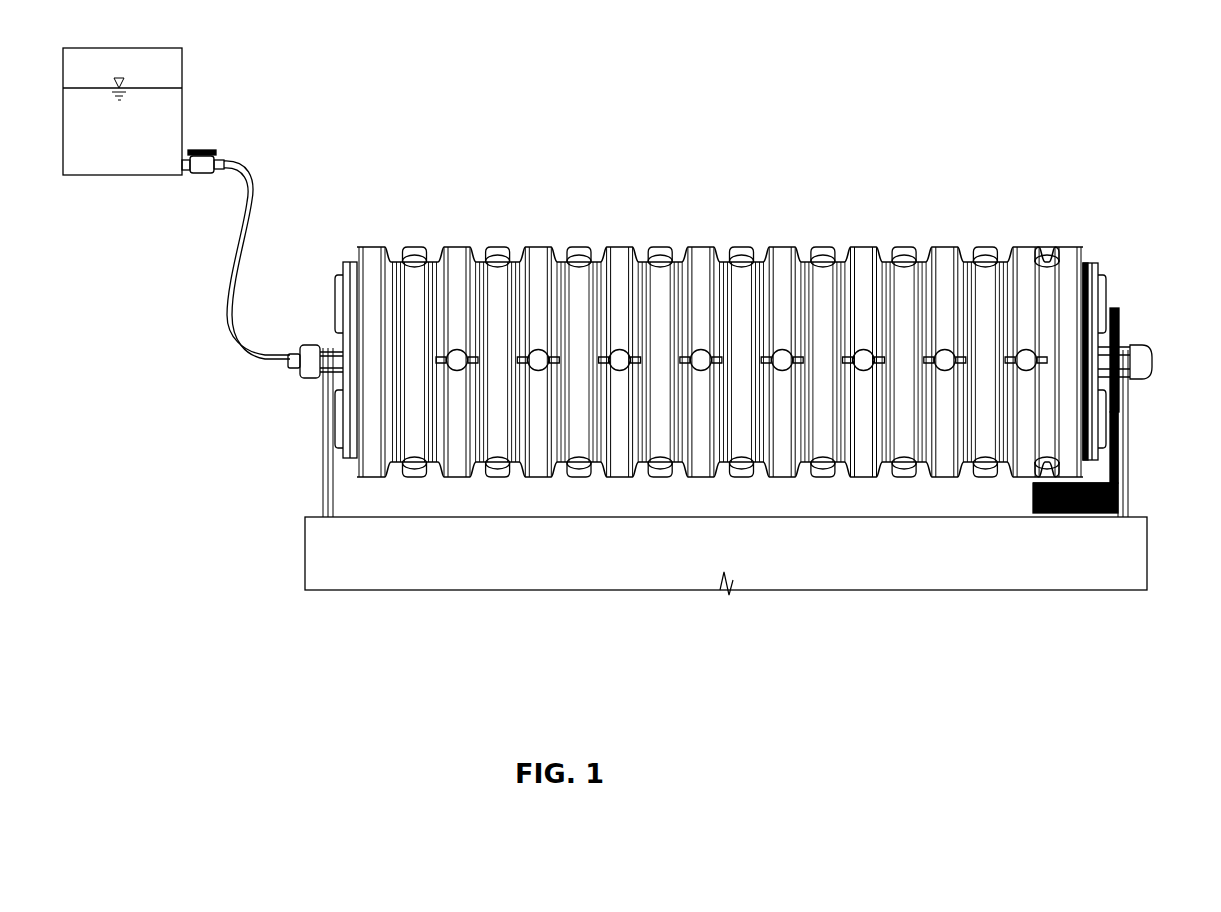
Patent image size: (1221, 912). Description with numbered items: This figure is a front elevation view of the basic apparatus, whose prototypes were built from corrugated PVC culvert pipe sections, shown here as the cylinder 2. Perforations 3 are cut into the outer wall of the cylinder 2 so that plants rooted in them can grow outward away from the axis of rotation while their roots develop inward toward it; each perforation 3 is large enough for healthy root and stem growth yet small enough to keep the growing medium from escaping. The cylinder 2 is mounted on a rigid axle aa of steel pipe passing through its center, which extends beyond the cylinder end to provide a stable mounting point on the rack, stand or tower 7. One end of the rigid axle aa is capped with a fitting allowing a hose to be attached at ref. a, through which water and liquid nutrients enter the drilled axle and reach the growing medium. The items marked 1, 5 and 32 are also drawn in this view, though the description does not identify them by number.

The hose fitting connection a is at (288, 110).
The end plate 1 is at (341, 282).
The cylinder 2 is at (936, 188).
The perforation 3 is at (427, 256).
The section line 5 is at (787, 214).
The rack, stand or tower 7 is at (322, 452).
The drive block 32 is at (1032, 498).
The rigid axle aa is at (1146, 340).